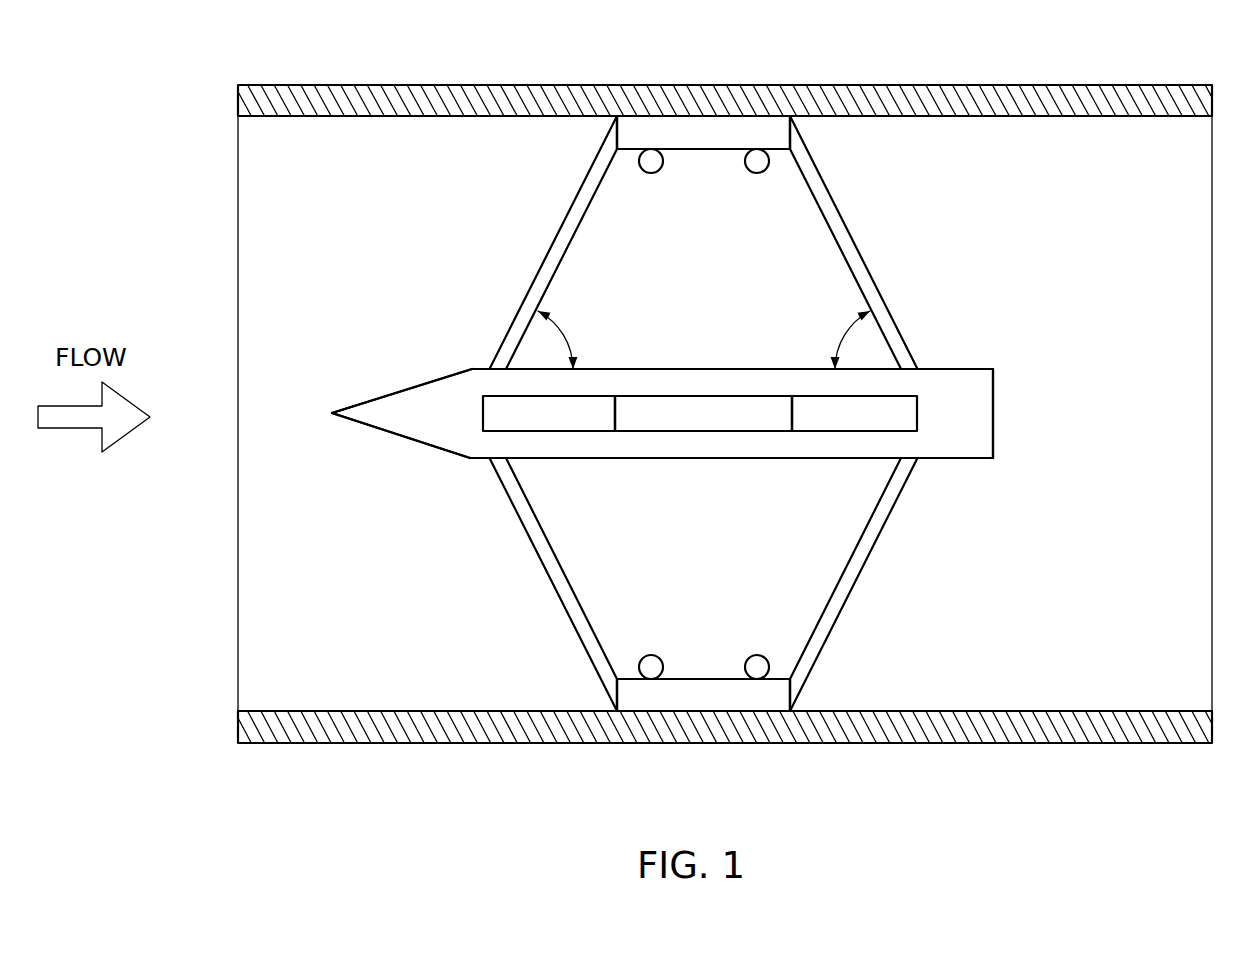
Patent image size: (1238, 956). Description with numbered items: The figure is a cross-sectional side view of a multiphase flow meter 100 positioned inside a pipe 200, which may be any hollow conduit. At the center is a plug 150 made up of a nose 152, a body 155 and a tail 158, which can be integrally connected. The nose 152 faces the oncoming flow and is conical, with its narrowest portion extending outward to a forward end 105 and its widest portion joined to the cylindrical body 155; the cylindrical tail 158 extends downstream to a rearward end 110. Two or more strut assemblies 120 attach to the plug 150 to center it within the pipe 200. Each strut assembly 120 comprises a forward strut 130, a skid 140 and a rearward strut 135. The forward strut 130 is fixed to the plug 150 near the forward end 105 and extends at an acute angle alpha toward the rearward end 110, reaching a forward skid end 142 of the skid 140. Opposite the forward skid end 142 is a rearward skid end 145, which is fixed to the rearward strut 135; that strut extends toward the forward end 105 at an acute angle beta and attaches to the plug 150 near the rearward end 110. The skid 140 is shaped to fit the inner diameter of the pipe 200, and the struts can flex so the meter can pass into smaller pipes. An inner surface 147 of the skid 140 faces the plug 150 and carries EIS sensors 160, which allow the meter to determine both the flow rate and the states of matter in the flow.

The multiphase flow meter 100 is at (1079, 208).
The forward end 105 is at (332, 411).
The rearward end 110 is at (996, 409).
The strut assembly 120 is at (545, 200).
The forward strut 130 is at (535, 277).
The rearward strut 135 is at (878, 272).
The skid 140 is at (694, 150).
The forward skid end 142 is at (613, 128).
The rearward skid end 145 is at (795, 128).
The inner surface 147 is at (718, 150).
The plug 150 is at (959, 357).
The nose 152 is at (400, 437).
The body 155 is at (660, 369).
The tail 158 is at (966, 458).
The EIS sensors 160 is at (641, 172).
The pipe 200 is at (1026, 84).